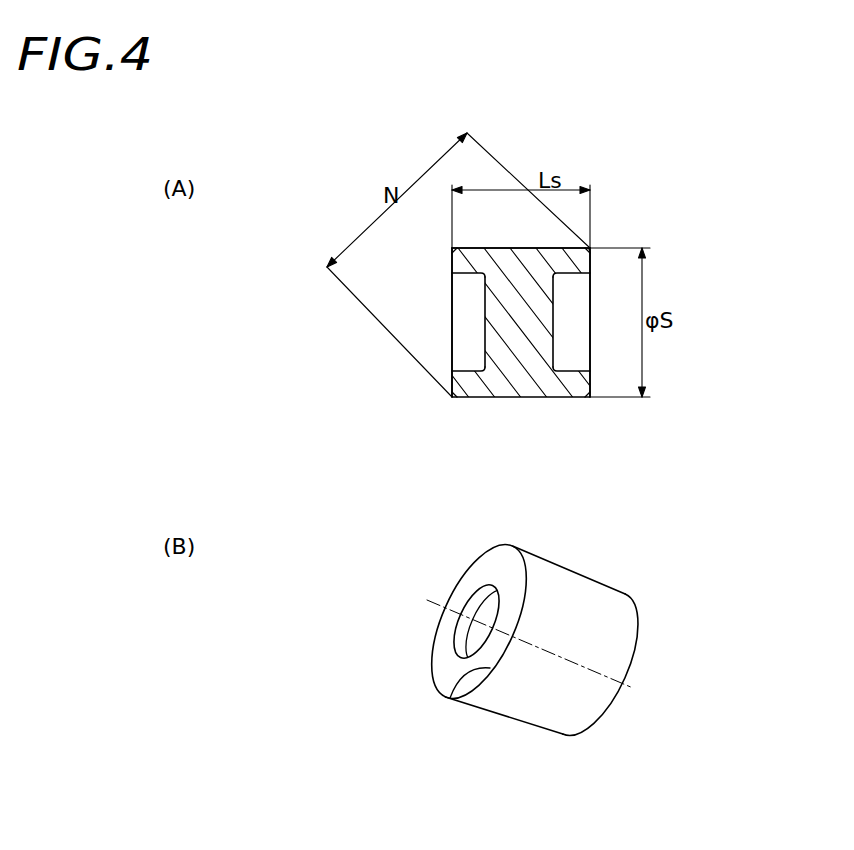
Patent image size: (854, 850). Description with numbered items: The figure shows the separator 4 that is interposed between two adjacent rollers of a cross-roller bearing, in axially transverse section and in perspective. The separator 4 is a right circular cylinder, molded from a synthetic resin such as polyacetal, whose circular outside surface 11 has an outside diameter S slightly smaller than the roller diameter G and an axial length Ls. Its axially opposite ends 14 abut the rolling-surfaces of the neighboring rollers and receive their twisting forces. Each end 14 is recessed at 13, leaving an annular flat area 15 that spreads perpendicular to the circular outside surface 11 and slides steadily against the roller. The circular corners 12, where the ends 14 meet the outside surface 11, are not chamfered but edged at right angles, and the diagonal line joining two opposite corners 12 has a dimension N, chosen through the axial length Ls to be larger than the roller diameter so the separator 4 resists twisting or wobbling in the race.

The separator 4 is at (615, 230).
The circular outside surface 11 is at (518, 247).
The circular corners 12 is at (450, 248).
The recess 13 is at (484, 324).
The axially opposite ends 14 is at (450, 257).
The annular flat area 15 is at (452, 265).